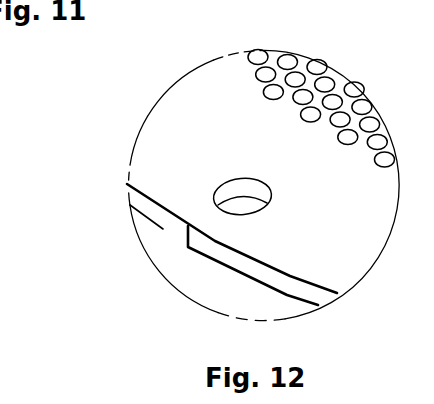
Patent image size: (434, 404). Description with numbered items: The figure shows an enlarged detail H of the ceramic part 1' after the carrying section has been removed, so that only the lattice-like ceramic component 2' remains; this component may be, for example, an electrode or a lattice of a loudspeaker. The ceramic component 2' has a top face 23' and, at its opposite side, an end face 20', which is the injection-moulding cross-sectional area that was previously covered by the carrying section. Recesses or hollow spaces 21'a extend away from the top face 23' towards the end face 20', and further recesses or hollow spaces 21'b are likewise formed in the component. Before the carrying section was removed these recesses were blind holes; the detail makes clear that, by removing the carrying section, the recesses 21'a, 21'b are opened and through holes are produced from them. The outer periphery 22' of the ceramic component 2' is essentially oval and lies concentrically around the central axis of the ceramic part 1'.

The ceramic part 1' is at (216, 175).
The ceramic component 2' is at (216, 175).
The end face 20' is at (228, 262).
The recesses 21'a is at (322, 83).
The further recesses 21'b is at (179, 167).
The outer periphery 22' is at (98, 238).
The top face 23' is at (260, 185).
The detail H is at (292, 317).